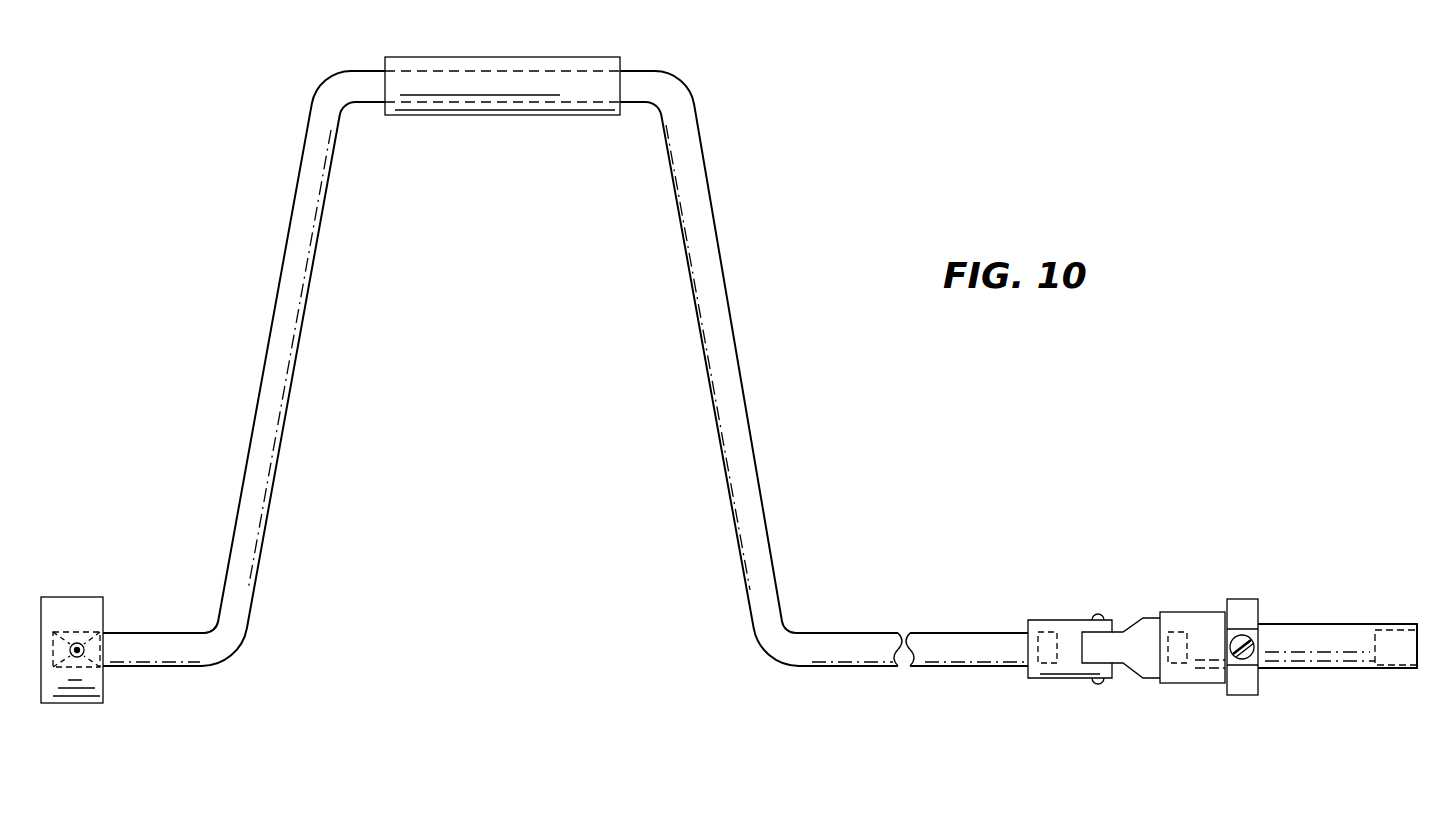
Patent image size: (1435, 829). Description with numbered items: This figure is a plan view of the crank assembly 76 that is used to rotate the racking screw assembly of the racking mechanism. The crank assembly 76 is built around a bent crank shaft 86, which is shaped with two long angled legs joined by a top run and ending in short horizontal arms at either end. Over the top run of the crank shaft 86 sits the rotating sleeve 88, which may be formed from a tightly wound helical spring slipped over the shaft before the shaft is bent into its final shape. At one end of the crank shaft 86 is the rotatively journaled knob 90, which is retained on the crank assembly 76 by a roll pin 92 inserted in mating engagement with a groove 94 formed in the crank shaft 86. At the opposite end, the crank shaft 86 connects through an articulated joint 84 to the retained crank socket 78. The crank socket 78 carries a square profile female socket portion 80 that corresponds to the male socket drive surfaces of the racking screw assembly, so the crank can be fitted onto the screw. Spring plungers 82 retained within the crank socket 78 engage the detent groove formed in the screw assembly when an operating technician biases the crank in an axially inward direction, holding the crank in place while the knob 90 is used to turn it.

The crank assembly 76 is at (886, 548).
The retained crank socket 78 is at (1328, 640).
The female socket portion 80 is at (1390, 668).
The spring plungers 82 is at (1192, 678).
The articulated joint 84 is at (1140, 627).
The crank shaft 86 is at (940, 640).
The rotating sleeve 88 is at (505, 107).
The rotatively journaled knob 90 is at (75, 697).
The roll pin 92 is at (85, 651).
The groove 94 is at (80, 630).